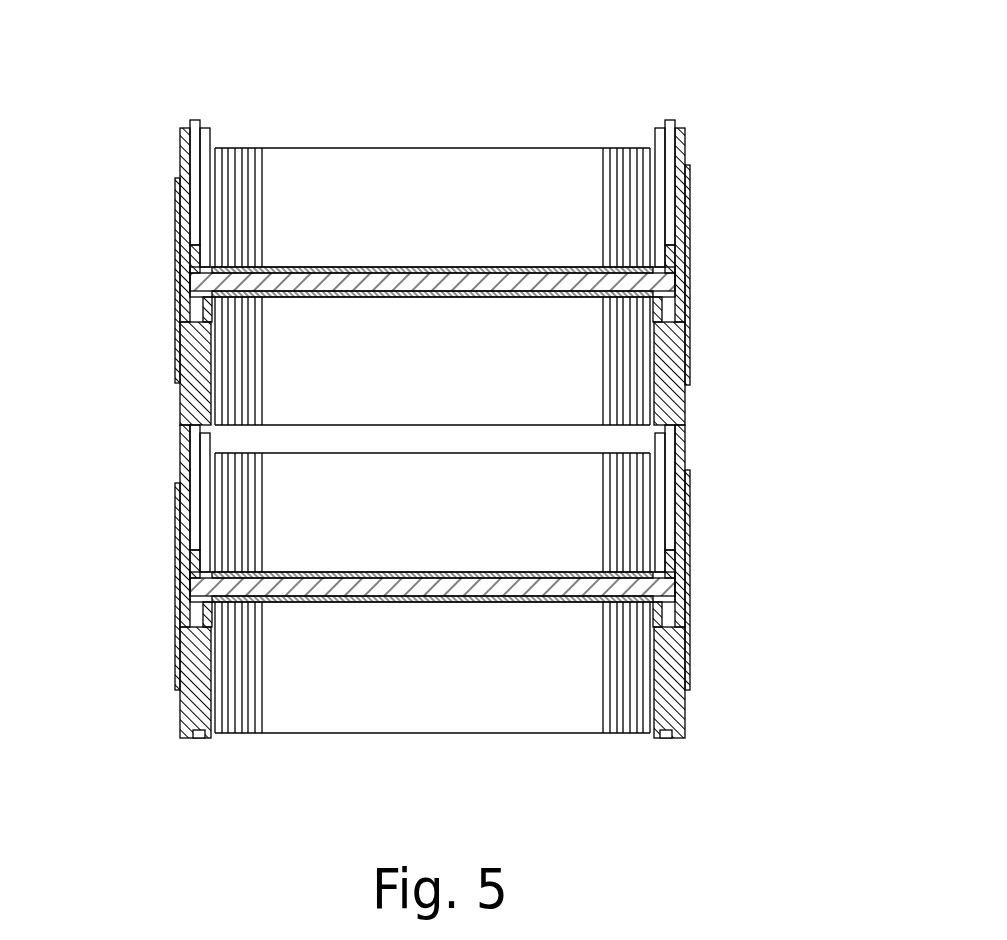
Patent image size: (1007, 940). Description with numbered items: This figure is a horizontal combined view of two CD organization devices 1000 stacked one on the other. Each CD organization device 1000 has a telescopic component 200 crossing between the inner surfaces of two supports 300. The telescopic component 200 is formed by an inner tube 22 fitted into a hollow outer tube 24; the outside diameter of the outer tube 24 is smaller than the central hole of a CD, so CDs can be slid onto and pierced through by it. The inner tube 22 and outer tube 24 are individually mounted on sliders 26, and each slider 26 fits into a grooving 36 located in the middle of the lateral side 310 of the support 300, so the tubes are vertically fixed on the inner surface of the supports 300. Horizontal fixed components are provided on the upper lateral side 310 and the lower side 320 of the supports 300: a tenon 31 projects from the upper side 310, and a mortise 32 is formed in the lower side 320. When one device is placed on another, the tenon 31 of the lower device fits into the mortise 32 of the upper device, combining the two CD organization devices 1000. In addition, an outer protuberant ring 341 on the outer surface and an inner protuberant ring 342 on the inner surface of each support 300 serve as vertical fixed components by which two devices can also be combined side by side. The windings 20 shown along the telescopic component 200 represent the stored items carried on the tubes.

The CD organization device 1000 is at (727, 224).
The upper lateral side 310 is at (188, 134).
The tenon 31 is at (197, 120).
The grooving 36 is at (195, 200).
The inner protuberant ring 342 is at (178, 180).
The outer protuberant ring 341 is at (690, 282).
The support 300 is at (190, 345).
The mortise 32 is at (195, 403).
The lower side 320 is at (186, 740).
The slider 26 is at (205, 590).
The coil winding 20 is at (232, 660).
The telescopic component 200 is at (423, 304).
The inner tube 22 is at (362, 270).
The outer tube 24 is at (468, 272).